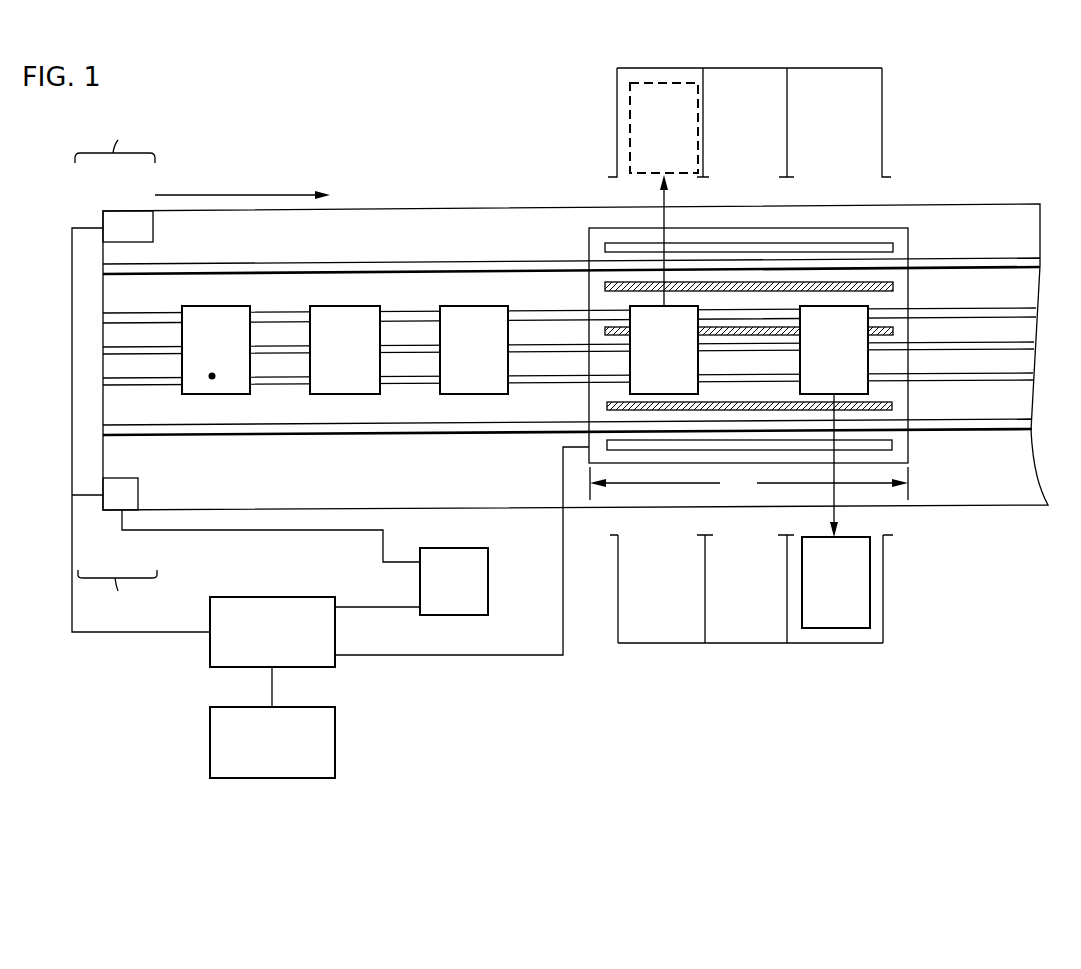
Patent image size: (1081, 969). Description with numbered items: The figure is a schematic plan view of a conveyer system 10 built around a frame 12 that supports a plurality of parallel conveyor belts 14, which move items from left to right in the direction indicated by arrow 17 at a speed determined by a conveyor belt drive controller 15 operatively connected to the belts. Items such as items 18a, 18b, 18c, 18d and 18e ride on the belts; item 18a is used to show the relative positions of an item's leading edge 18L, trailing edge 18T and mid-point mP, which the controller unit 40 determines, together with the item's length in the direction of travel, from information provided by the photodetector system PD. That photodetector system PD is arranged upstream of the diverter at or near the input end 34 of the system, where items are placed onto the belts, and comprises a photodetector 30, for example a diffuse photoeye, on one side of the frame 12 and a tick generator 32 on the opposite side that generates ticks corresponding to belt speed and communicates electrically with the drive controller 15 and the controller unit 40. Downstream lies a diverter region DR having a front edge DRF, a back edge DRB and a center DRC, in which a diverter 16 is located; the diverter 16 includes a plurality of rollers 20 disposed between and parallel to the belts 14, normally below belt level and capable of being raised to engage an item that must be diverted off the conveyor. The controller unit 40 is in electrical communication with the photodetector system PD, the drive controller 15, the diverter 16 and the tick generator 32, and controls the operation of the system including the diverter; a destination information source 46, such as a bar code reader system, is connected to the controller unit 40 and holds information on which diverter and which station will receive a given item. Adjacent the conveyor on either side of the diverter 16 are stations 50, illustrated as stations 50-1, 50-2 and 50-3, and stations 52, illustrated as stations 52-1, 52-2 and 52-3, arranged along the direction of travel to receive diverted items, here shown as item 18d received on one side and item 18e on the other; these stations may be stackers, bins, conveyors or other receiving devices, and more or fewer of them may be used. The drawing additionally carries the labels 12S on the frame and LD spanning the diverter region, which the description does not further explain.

The conveyer system 10 is at (458, 58).
The frame 12 is at (1003, 204).
The print medium surface / track 12S is at (181, 338).
The conveyor belts 14 is at (1010, 258).
The conveyor belt drive controller 15 is at (441, 590).
The diverter 16 is at (903, 237).
The arrow 17 is at (227, 192).
The item 18a is at (198, 352).
The item 18b is at (327, 352).
The item 18c is at (456, 352).
The item 18d is at (646, 352).
The item 18e is at (816, 352).
The trailing edge 18T is at (180, 332).
The leading edge 18L is at (251, 337).
The rollers 20 is at (893, 413).
The photodetector 30 is at (132, 216).
The tick generator 32 is at (120, 498).
The input end 34 is at (103, 405).
The controller unit 40 is at (259, 643).
The destination information source 46 is at (259, 753).
The stations 50 is at (750, 60).
The station 50-1 is at (632, 72).
The station 50-2 is at (732, 77).
The station 50-3 is at (837, 83).
The stations 52 is at (758, 653).
The station 52-1 is at (653, 635).
The station 52-2 is at (730, 637).
The station 52-3 is at (830, 635).
The mid-point mP is at (212, 376).
The photodetector system PD is at (116, 369).
The diverter region DR is at (585, 222).
The back edge DRB is at (589, 236).
The front edge DRF is at (910, 292).
The center DRC is at (748, 360).
The detection length LD is at (749, 484).